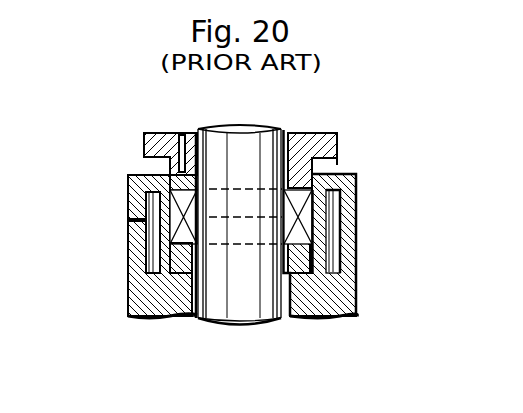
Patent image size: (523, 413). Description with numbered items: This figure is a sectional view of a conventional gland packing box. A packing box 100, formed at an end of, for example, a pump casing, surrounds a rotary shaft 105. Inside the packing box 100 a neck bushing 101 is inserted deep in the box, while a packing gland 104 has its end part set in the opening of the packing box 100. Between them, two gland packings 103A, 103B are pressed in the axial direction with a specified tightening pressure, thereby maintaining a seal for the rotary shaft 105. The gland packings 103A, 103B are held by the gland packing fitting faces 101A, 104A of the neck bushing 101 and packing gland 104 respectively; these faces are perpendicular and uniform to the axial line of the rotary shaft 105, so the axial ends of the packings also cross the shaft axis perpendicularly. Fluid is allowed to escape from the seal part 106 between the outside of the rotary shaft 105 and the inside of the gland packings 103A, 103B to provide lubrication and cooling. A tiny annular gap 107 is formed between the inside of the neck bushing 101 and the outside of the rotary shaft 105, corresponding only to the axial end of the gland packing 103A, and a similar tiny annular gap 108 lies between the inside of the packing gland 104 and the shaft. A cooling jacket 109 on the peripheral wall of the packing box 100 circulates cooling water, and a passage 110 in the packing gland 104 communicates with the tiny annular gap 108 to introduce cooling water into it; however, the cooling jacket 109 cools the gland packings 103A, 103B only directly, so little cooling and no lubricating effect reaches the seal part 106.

The packing box 100 is at (356, 263).
The neck bushing 101 is at (306, 317).
The gland packing fitting face 101A is at (185, 272).
The gland packing 103A is at (343, 233).
The gland packing 103B is at (342, 197).
The packing gland 104 is at (333, 130).
The gland packing fitting face 104A is at (337, 162).
The rotary shaft 105 is at (269, 127).
The seal part 106 is at (158, 203).
The tiny annular gap 107 is at (196, 262).
The tiny annular gap 108 is at (203, 167).
The cooling jacket 109 is at (155, 261).
The passage 110 is at (183, 131).